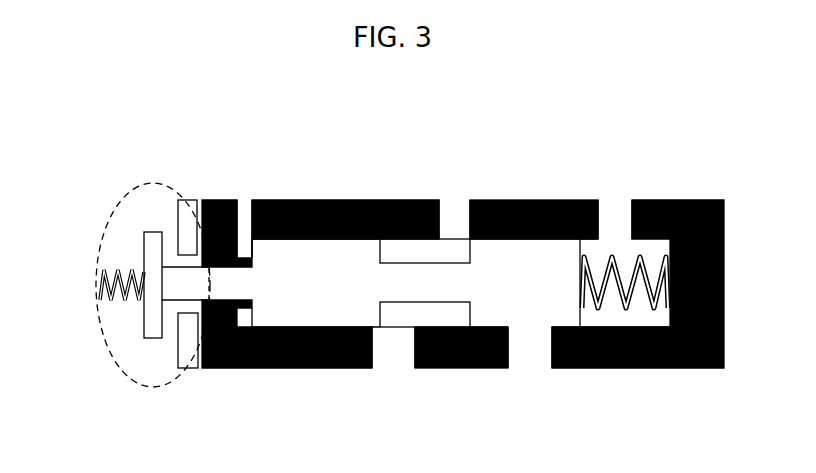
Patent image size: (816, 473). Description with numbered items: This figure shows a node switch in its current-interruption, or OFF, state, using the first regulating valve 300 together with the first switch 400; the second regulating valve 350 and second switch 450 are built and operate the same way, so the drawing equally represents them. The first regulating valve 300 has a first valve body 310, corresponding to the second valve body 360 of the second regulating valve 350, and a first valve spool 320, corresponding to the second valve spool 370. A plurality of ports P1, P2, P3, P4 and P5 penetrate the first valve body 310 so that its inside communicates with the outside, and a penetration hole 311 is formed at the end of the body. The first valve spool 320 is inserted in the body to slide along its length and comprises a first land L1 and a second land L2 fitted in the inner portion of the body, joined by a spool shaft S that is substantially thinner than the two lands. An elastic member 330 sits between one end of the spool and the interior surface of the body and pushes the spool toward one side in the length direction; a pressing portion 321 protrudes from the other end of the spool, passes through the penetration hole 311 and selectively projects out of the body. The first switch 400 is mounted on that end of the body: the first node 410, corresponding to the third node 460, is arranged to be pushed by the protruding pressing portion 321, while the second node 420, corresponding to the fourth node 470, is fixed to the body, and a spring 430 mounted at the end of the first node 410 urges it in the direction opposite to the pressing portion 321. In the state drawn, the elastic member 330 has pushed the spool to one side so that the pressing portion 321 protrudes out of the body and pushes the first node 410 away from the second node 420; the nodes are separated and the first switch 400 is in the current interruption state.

The first regulating valve 300 is at (676, 145).
The second regulating valve 350 is at (481, 259).
The first valve body 310 is at (697, 368).
The second valve body 360 is at (468, 322).
The first valve spool 320 is at (524, 329).
The second valve spool 370 is at (475, 387).
The elastic member 330 is at (632, 309).
The first switch 400 is at (112, 197).
The second switch 450 is at (141, 252).
The first node 410 is at (150, 328).
The third node 460 is at (104, 300).
The second node 420 is at (192, 368).
The fourth node 470 is at (205, 327).
The spring 430 is at (100, 287).
The pressing portion 321 is at (167, 267).
The penetration hole 311 is at (201, 310).
The port P1 is at (393, 362).
The port P2 is at (454, 203).
The port P3 is at (245, 213).
The port P4 is at (615, 203).
The port P5 is at (530, 363).
The first land L1 is at (316, 283).
The second land L2 is at (570, 283).
The spool shaft S is at (409, 302).